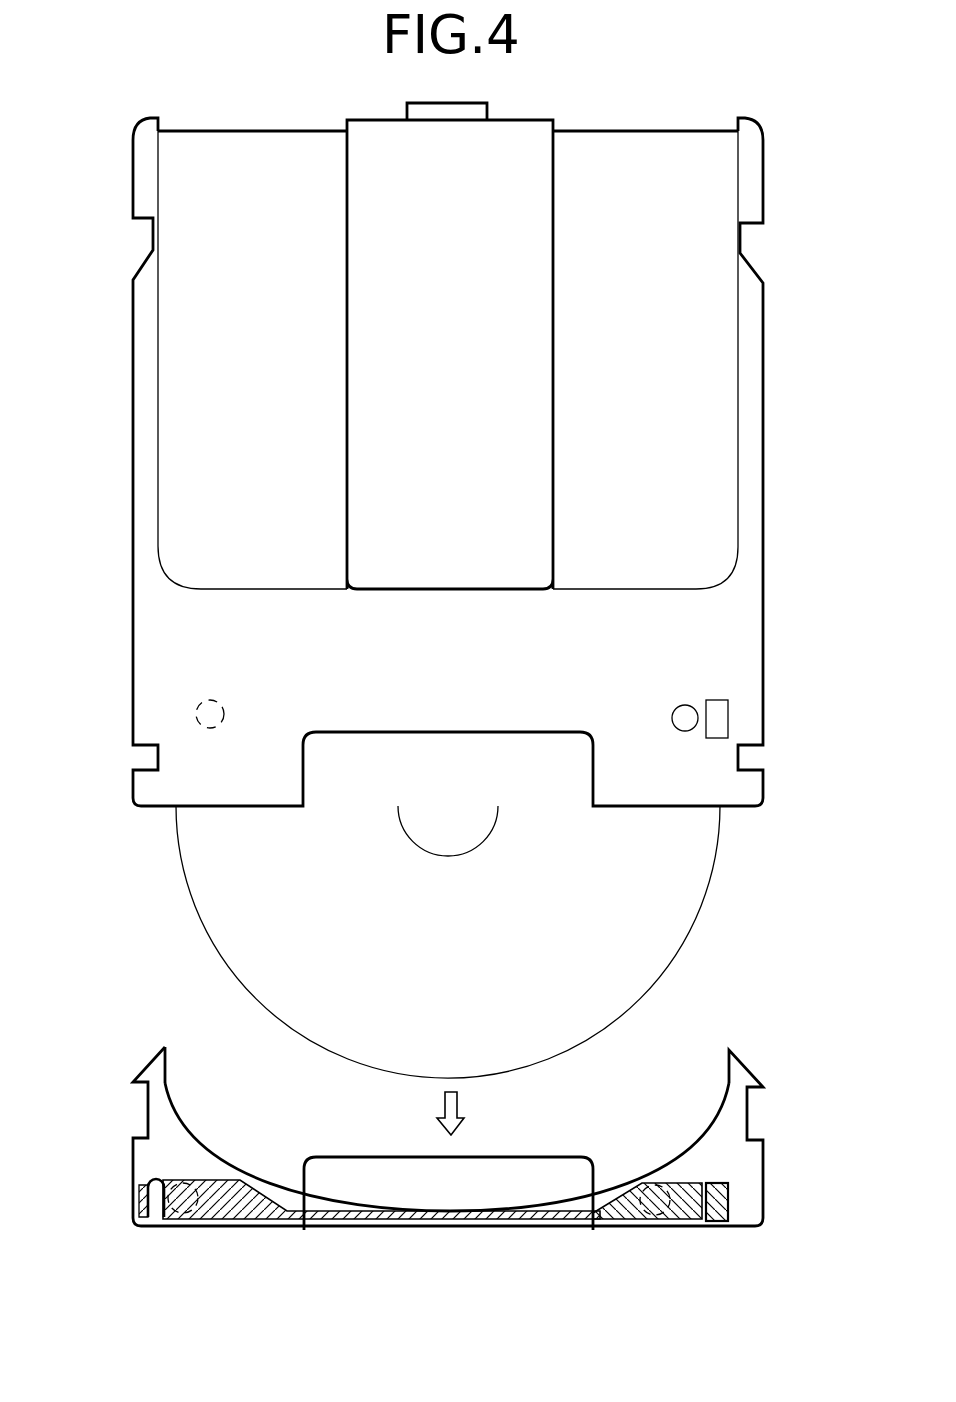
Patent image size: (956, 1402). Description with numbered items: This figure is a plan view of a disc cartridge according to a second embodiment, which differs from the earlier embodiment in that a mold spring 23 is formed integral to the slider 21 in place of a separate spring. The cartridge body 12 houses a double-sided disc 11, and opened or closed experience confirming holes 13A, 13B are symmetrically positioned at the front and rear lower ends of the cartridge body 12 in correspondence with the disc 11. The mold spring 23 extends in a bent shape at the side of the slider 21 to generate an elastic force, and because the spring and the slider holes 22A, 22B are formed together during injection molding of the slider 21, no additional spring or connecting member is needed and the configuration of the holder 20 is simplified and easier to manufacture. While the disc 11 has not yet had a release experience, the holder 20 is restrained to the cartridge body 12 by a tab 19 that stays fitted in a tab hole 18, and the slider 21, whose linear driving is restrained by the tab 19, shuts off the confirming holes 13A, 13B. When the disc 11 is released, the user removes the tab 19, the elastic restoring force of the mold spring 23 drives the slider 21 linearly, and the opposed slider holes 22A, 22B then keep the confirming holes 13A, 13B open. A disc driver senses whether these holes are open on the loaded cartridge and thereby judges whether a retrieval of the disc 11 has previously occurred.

The double-sided disc 11 is at (677, 928).
The cartridge body 12 is at (763, 322).
The opened or closed experience confirming hole 13A is at (686, 718).
The opened or closed experience confirming hole 13B is at (207, 708).
The tab hole 18 is at (720, 720).
The tab 19 is at (730, 1213).
The holder 20 is at (763, 1155).
The slider 21 is at (617, 1213).
The slider hole 22A is at (660, 1220).
The slider hole 22B is at (193, 1208).
The mold spring 23 is at (152, 1224).